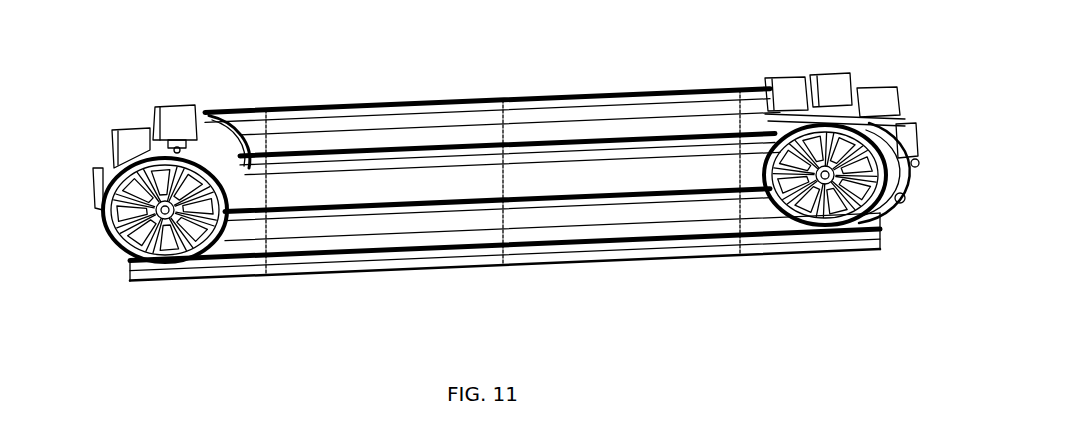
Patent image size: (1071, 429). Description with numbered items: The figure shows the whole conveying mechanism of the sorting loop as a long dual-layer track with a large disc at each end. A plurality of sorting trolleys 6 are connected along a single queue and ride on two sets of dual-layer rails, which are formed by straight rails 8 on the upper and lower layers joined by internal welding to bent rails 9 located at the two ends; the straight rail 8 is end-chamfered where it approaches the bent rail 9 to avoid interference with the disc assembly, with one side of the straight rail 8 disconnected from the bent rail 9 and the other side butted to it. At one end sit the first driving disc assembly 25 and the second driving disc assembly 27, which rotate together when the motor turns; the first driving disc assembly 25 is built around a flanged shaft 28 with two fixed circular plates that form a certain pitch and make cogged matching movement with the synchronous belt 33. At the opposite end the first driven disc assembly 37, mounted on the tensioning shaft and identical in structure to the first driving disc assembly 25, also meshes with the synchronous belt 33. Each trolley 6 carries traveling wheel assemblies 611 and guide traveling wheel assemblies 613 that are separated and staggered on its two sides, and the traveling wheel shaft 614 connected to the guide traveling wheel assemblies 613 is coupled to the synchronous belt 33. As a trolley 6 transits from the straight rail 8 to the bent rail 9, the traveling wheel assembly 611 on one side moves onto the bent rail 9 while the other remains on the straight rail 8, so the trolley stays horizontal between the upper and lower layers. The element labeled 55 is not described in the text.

The sorting trolley 6 is at (177, 128).
The straight rail 8 is at (250, 118).
The bent rail 9 is at (877, 210).
The first driving disc assembly 25 is at (818, 226).
The second driving disc assembly 27 is at (853, 88).
The flanged shaft 28 is at (221, 111).
The synchronous belt 33 is at (450, 99).
The first driven disc assembly 37 is at (132, 244).
The lower rail 55 is at (493, 248).
The traveling wheel assembly 611 is at (176, 142).
The guide traveling wheel assembly 613 is at (148, 160).
The traveling wheel shaft 614 is at (905, 200).